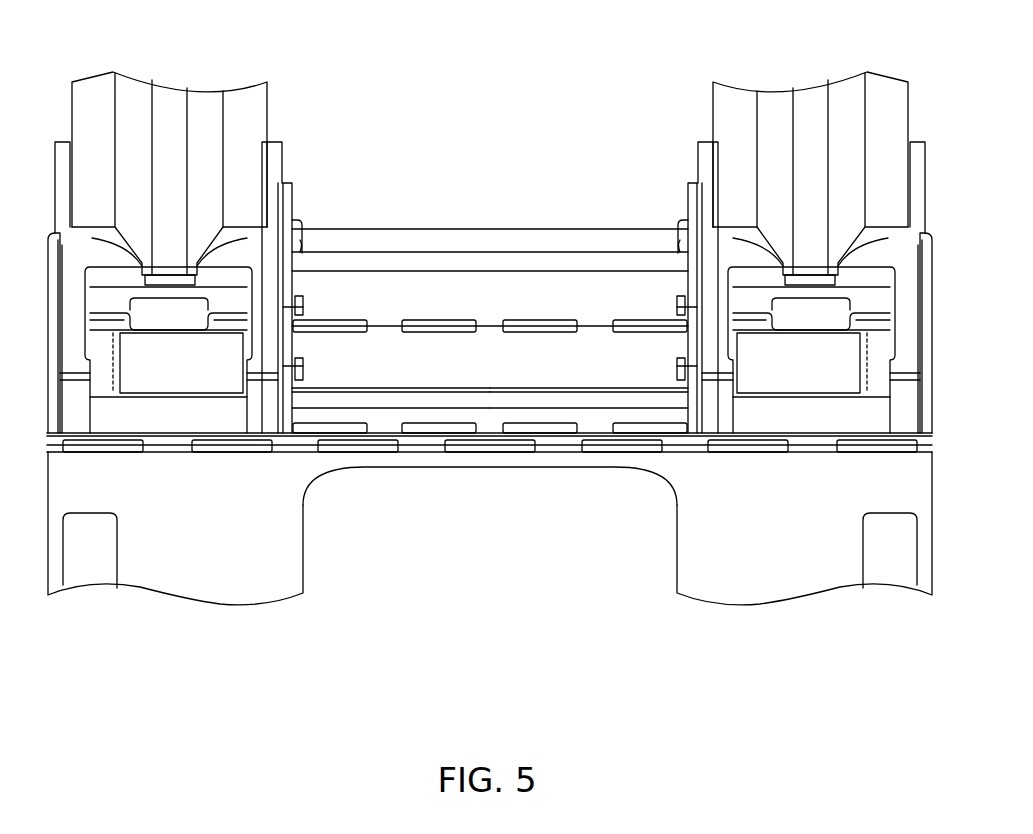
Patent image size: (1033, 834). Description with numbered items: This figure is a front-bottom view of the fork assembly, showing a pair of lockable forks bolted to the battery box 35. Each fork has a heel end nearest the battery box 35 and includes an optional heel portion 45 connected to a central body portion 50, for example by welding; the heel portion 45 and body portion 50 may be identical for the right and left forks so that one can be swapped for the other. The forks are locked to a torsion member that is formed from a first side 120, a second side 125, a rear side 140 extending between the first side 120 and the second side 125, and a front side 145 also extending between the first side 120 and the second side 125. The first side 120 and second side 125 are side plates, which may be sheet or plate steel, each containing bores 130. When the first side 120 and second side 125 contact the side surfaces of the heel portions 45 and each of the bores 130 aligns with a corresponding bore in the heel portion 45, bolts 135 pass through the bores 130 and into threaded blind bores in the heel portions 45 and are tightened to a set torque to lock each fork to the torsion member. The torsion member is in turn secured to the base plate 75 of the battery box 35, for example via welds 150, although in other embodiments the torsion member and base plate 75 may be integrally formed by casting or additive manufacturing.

The battery box 35 is at (505, 196).
The heel portion 45 is at (72, 312).
The central body portion 50 is at (167, 93).
The base plate 75 is at (168, 415).
The first side 120 is at (287, 400).
The second side 125 is at (693, 400).
The bores 130 is at (302, 300).
The bolts 135 is at (325, 340).
The rear side 140 is at (447, 262).
The front side 145 is at (488, 422).
The welds 150 is at (353, 318).